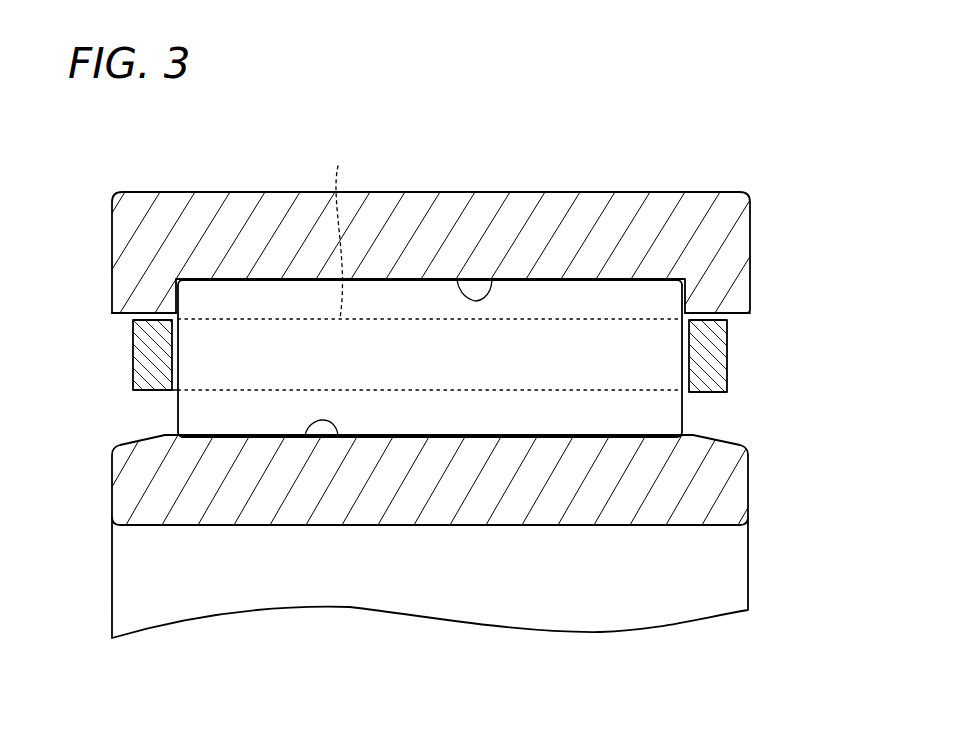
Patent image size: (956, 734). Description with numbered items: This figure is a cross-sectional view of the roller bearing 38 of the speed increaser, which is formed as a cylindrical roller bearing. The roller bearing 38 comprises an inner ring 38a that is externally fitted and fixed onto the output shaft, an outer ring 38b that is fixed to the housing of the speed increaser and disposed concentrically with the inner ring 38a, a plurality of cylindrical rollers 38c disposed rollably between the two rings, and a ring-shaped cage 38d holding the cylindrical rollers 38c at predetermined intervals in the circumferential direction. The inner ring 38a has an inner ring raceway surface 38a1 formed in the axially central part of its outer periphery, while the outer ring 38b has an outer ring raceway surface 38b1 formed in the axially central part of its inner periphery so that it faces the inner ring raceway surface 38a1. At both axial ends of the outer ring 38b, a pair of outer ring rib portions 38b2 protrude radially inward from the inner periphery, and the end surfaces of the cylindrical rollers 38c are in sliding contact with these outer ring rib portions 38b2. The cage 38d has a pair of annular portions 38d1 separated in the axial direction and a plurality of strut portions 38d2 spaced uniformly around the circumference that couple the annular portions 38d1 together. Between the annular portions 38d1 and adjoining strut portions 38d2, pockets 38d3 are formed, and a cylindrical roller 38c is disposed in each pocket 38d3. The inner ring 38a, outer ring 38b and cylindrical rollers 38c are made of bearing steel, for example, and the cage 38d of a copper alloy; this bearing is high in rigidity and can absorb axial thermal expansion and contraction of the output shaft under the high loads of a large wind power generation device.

The roller bearing 38 is at (722, 162).
The inner ring 38a is at (500, 526).
The inner ring raceway surface 38a1 is at (338, 435).
The outer ring 38b is at (402, 191).
The outer ring raceway surface 38b1 is at (492, 279).
The outer ring rib portions 38b2 is at (114, 317).
The cylindrical rollers 38c is at (680, 414).
The cage 38d is at (737, 387).
The annular portions 38d1 is at (135, 343).
The strut portions 38d2 is at (338, 224).
The pockets 38d3 is at (171, 397).